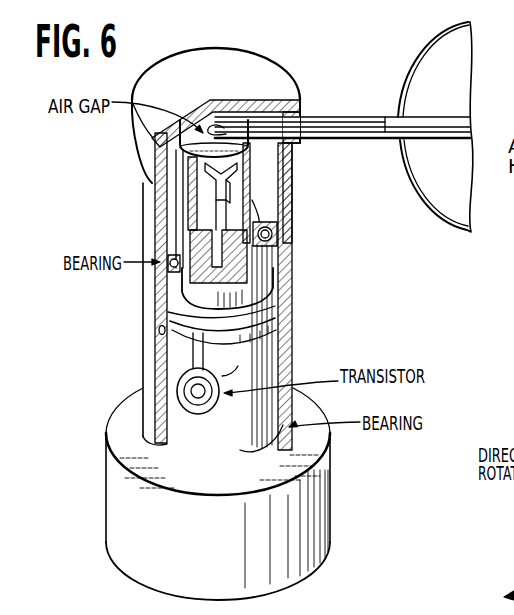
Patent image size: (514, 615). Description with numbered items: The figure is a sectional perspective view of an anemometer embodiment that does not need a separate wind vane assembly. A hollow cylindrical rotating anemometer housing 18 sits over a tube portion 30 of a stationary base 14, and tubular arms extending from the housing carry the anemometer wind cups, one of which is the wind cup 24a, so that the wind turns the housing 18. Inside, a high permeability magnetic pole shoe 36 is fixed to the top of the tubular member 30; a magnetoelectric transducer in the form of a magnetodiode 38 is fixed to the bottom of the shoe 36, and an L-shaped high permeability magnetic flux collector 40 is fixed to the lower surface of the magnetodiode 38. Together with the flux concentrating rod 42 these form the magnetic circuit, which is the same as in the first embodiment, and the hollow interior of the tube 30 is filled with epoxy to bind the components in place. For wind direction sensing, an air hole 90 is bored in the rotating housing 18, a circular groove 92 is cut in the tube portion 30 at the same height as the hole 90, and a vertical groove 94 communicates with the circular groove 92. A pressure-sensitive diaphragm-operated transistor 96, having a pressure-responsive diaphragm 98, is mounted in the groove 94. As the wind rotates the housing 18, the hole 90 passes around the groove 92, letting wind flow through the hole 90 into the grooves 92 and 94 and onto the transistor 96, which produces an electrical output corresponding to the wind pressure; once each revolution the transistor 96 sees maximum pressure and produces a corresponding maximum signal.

The base 14 is at (327, 492).
The rotating anemometer housing 18 is at (141, 207).
The wind cup 24a is at (437, 52).
The tubular member 30 is at (172, 218).
The magnetic pole shoe 36 is at (197, 146).
The magnetodiode 38 is at (240, 175).
The magnetic flux collector 40 is at (278, 220).
The flux concentrating rod 42 is at (263, 138).
The air hole 90 is at (158, 331).
The circular groove 92 is at (268, 325).
The vertical groove 94 is at (195, 348).
The pressure-sensitive transistor 96 is at (238, 366).
The pressure-responsive diaphragm 98 is at (197, 392).